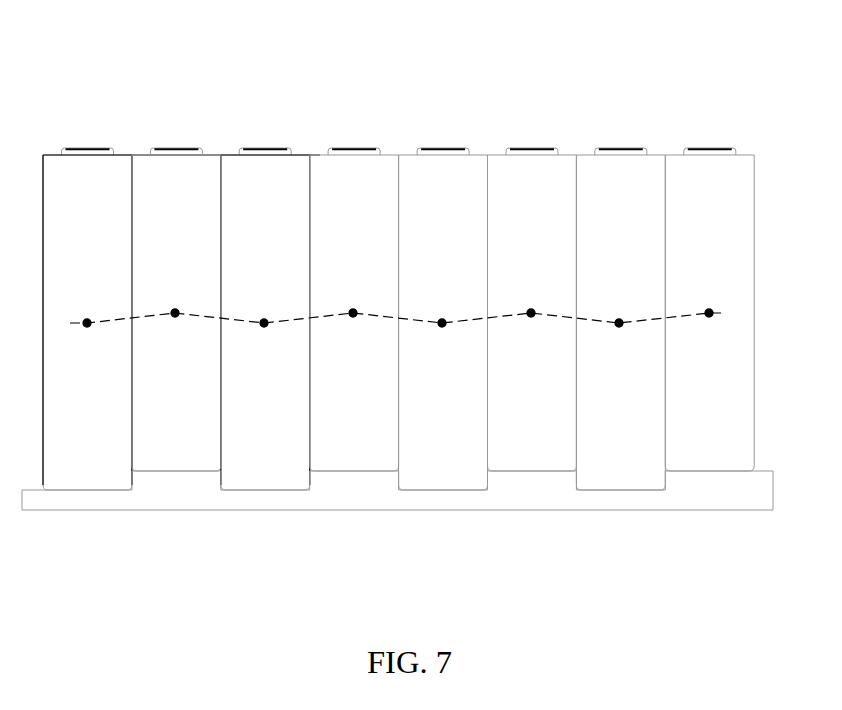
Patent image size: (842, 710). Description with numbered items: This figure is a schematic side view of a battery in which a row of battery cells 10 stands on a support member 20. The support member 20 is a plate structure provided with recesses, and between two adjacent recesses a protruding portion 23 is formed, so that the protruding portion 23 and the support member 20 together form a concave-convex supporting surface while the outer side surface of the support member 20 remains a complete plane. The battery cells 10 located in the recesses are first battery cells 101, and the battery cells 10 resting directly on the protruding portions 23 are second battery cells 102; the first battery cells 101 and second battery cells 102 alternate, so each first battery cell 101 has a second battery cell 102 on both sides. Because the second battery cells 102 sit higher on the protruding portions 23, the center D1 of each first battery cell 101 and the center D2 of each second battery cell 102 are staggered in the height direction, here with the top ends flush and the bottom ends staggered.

The battery cell 10 is at (747, 70).
The first battery cell 101 is at (99, 195).
The second battery cell 102 is at (182, 195).
The support member 20 is at (79, 500).
The protruding portion 23 is at (173, 478).
The center of the first battery cell D1 is at (87, 327).
The center of the second battery cell D2 is at (175, 317).